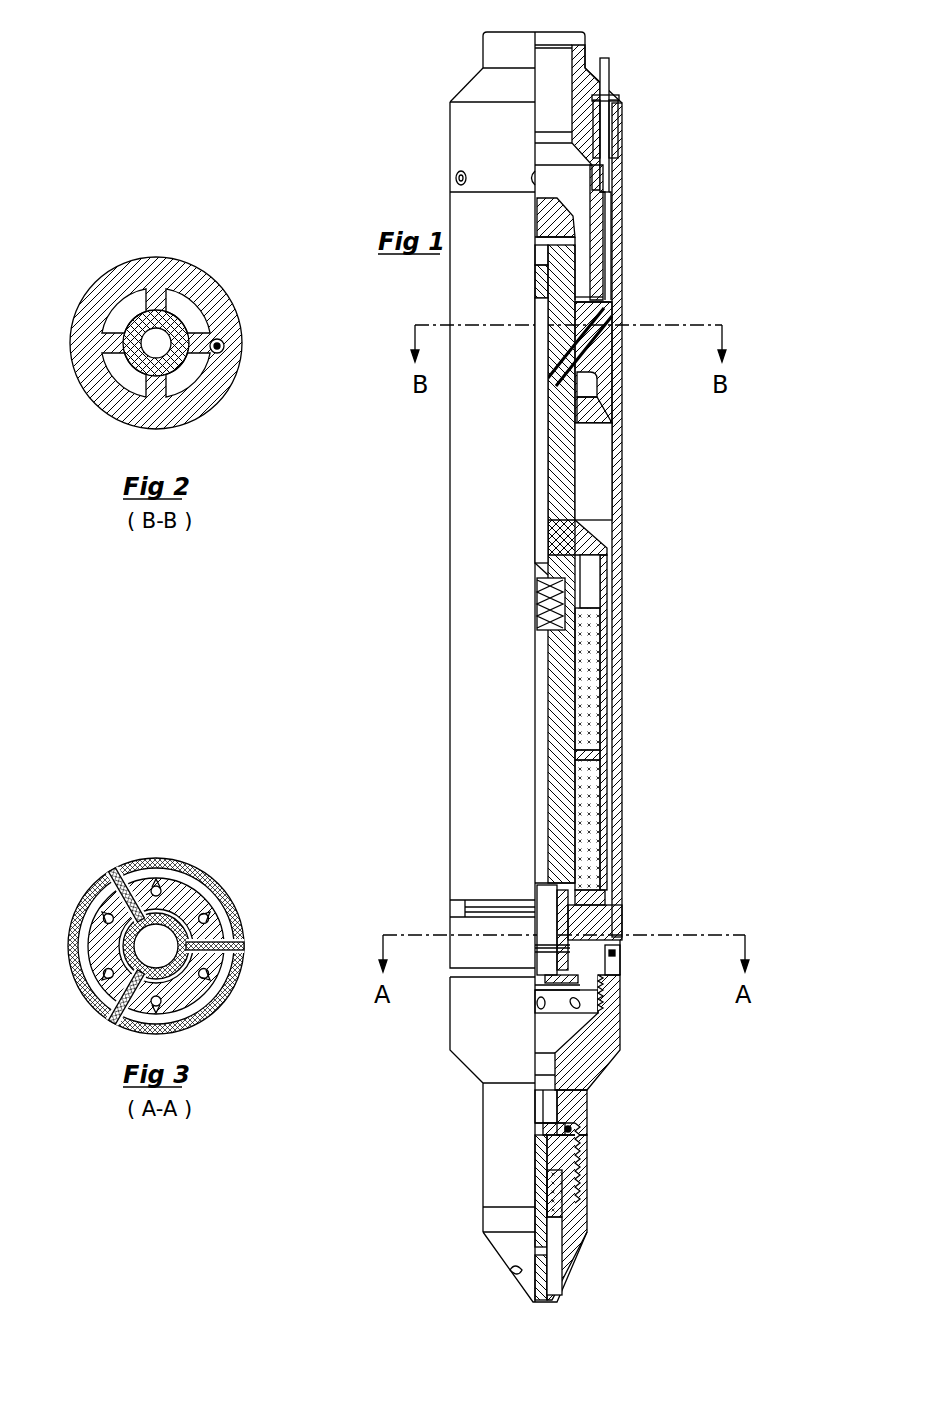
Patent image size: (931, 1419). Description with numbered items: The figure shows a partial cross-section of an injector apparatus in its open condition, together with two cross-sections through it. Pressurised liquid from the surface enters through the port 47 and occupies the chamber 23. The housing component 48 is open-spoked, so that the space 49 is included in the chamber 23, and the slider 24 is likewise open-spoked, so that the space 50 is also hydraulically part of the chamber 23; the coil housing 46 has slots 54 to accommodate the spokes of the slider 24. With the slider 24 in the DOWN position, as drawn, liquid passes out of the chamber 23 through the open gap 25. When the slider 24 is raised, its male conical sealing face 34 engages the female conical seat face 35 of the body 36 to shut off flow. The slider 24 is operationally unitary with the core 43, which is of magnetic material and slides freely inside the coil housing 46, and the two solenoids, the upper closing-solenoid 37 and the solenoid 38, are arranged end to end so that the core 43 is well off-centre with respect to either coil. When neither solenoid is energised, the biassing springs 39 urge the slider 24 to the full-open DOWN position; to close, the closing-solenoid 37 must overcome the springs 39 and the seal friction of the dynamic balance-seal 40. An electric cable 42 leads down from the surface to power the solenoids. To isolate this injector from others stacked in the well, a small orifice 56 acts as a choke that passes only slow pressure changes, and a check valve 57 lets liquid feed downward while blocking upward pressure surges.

In FIG. 1, the chamber 23 is at (583, 217).
In FIG. 1, the slider 24 is at (480, 947).
In FIG. 3, the slider 24 is at (230, 990).
In FIG. 1, the gap 25 is at (455, 907).
In FIG. 1, the conical sealing face 34 is at (617, 912).
In FIG. 1, the conical seat face 35 is at (618, 902).
In FIG. 1, the body 36 is at (617, 652).
In FIG. 1, the closing-solenoid 37 is at (588, 695).
In FIG. 1, the solenoid 38 is at (593, 812).
In FIG. 1, the biassing springs 39 is at (550, 610).
In FIG. 1, the dynamic balance-seal 40 is at (618, 955).
In FIG. 1, the electric cable 42 is at (605, 78).
In FIG. 1, the core 43 is at (560, 723).
In FIG. 1, the coil housing 46 is at (605, 572).
In FIG. 2, the coil housing 46 is at (142, 323).
In FIG. 3, the coil housing 46 is at (183, 892).
In FIG. 1, the port 47 is at (558, 35).
In FIG. 1, the housing component 48 is at (600, 378).
In FIG. 2, the housing component 48 is at (217, 407).
In FIG. 1, the space 49 is at (596, 510).
In FIG. 1, the space 50 is at (557, 1040).
In FIG. 3, the slots 54 is at (95, 890).
In FIG. 1, the orifice 56 is at (537, 1102).
In FIG. 1, the check valve 57 is at (537, 1153).